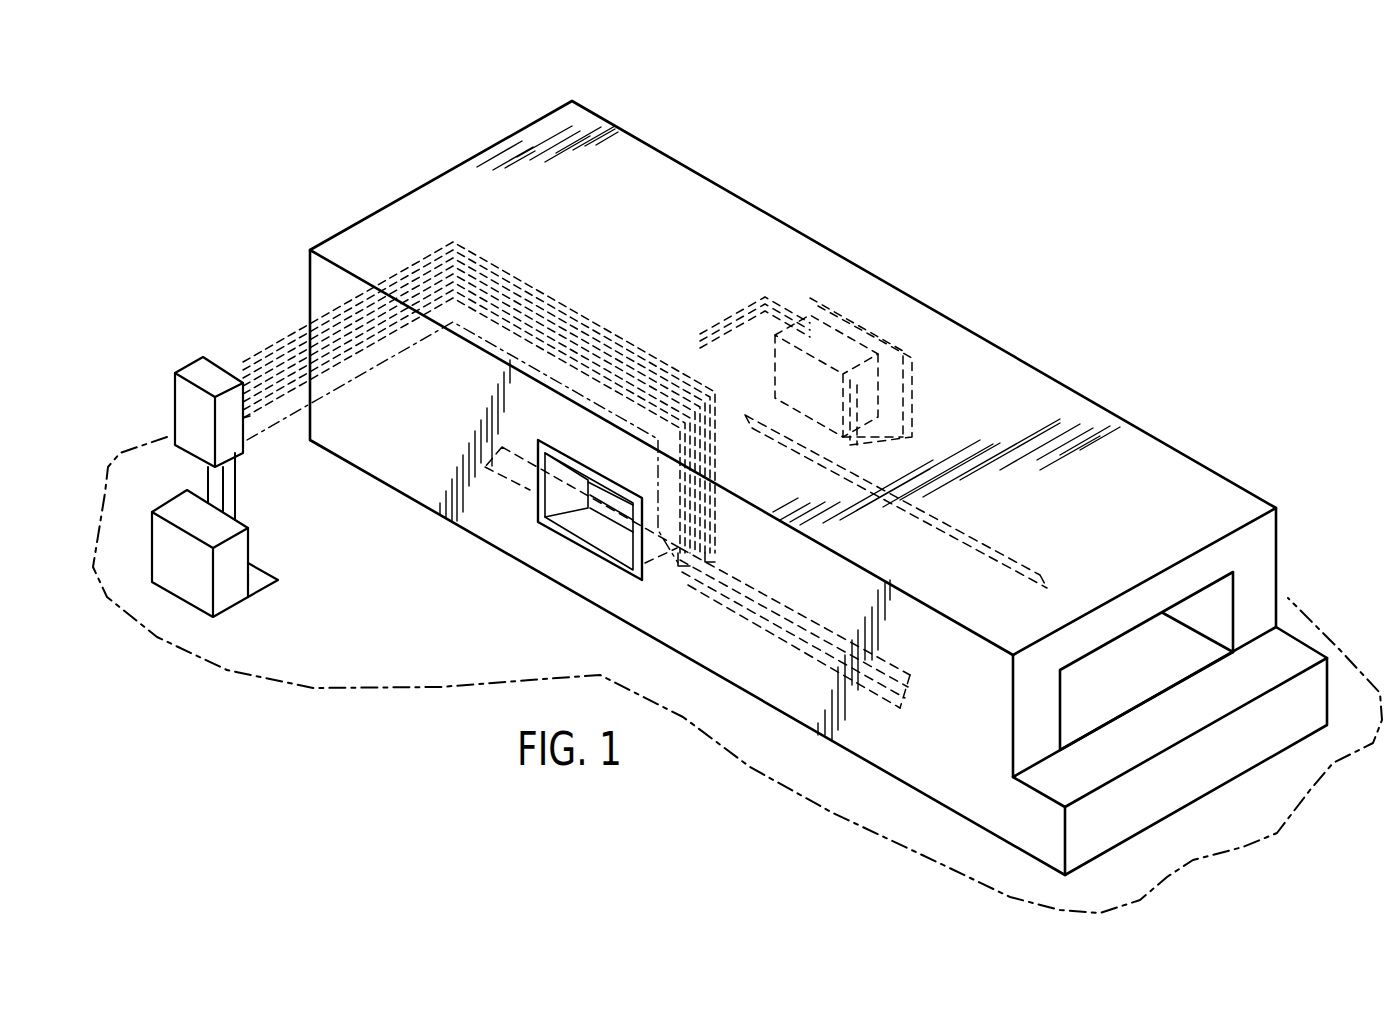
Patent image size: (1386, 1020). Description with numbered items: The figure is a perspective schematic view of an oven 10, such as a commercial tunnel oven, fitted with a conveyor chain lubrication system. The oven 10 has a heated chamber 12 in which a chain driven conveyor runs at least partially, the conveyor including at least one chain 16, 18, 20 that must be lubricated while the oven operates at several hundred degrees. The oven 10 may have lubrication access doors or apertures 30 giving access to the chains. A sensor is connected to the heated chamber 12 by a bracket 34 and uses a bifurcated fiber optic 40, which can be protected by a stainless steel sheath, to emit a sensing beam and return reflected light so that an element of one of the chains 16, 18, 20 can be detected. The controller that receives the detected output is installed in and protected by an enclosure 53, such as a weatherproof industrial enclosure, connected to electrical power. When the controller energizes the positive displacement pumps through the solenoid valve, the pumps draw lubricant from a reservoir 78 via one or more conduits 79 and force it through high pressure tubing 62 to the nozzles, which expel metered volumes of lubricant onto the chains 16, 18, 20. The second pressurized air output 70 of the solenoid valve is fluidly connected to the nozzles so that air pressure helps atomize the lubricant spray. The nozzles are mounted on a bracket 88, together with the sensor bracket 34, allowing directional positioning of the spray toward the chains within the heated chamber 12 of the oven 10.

The oven 10 is at (985, 166).
The heated chamber 12 is at (1210, 602).
The chain 16 is at (910, 682).
The chain 18 is at (1040, 572).
The chain 20 is at (807, 645).
The lubrication access door or aperture 30 is at (560, 537).
The bracket 34 is at (680, 563).
The bifurcated fiber optic 40 is at (283, 420).
The enclosure 53 is at (198, 365).
The high pressure tubing 62 is at (272, 345).
The second pressurized air output 70 is at (262, 413).
The reservoir 78 is at (227, 588).
The conduit 79 is at (207, 477).
The bracket 88 is at (857, 457).